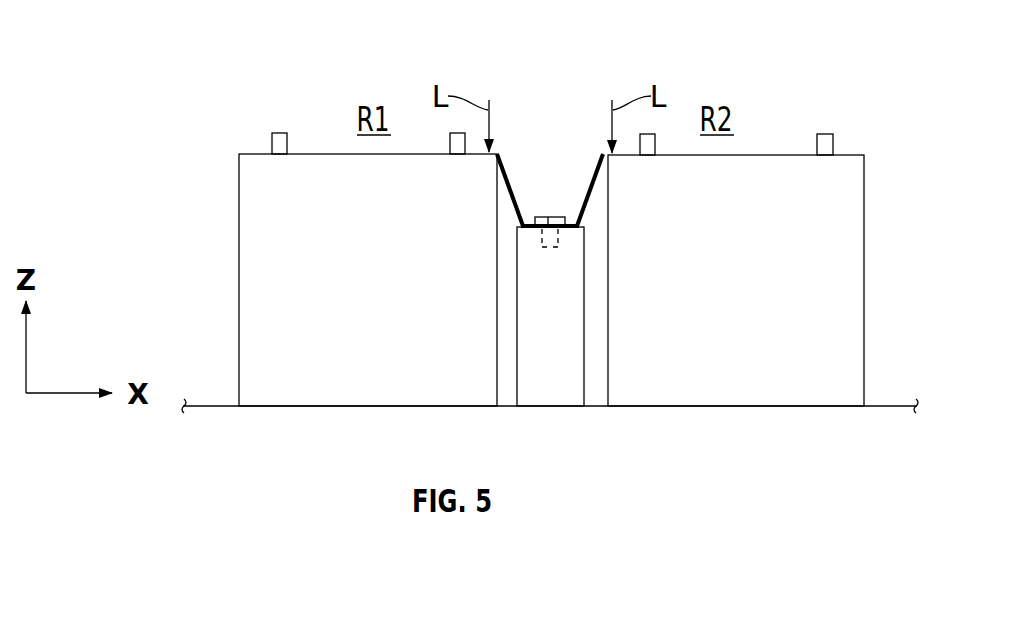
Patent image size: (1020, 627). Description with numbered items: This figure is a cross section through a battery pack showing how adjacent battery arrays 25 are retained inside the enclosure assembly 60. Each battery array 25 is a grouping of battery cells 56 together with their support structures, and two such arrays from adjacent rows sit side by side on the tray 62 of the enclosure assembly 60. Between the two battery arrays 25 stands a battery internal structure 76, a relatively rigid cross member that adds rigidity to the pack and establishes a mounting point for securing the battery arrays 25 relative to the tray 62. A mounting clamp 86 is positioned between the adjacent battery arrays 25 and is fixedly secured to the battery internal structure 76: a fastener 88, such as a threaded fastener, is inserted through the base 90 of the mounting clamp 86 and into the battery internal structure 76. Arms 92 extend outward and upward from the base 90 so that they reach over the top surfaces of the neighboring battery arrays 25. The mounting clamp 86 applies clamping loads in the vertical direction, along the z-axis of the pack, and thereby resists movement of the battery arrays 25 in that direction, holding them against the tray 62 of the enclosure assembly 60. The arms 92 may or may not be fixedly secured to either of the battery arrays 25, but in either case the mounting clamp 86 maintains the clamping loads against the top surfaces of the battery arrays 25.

The battery array 25 is at (551, 229).
The battery cell 56 is at (353, 296).
The enclosure assembly 60 is at (550, 448).
The tray 62 is at (358, 409).
The battery internal structure 76 is at (537, 393).
The mounting clamp 86 is at (521, 144).
The fastener 88 is at (526, 223).
The base 90 is at (566, 216).
The arm 92 is at (503, 166).